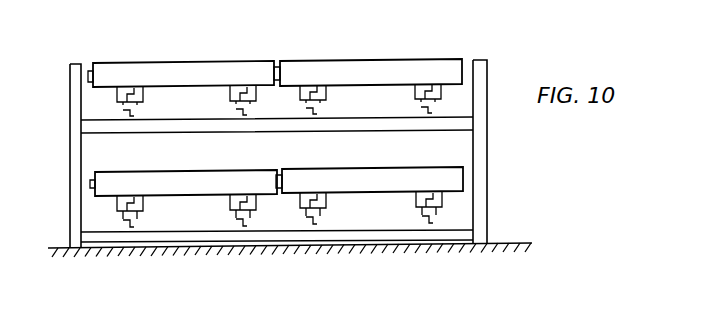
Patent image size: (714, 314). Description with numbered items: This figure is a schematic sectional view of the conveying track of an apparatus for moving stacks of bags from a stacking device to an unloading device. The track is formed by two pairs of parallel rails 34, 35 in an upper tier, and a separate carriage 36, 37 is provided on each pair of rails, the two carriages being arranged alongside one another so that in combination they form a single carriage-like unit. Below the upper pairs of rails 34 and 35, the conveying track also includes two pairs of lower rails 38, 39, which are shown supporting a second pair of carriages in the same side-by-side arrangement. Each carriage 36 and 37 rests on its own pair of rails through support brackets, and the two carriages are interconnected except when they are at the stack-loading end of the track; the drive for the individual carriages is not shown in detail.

The pair of parallel rails 34 is at (238, 117).
The pair of parallel rails 35 is at (425, 116).
The carriage 36 is at (209, 75).
The carriage 37 is at (398, 73).
The pair of lower rails 38 is at (238, 230).
The pair of lower rails 39 is at (428, 229).